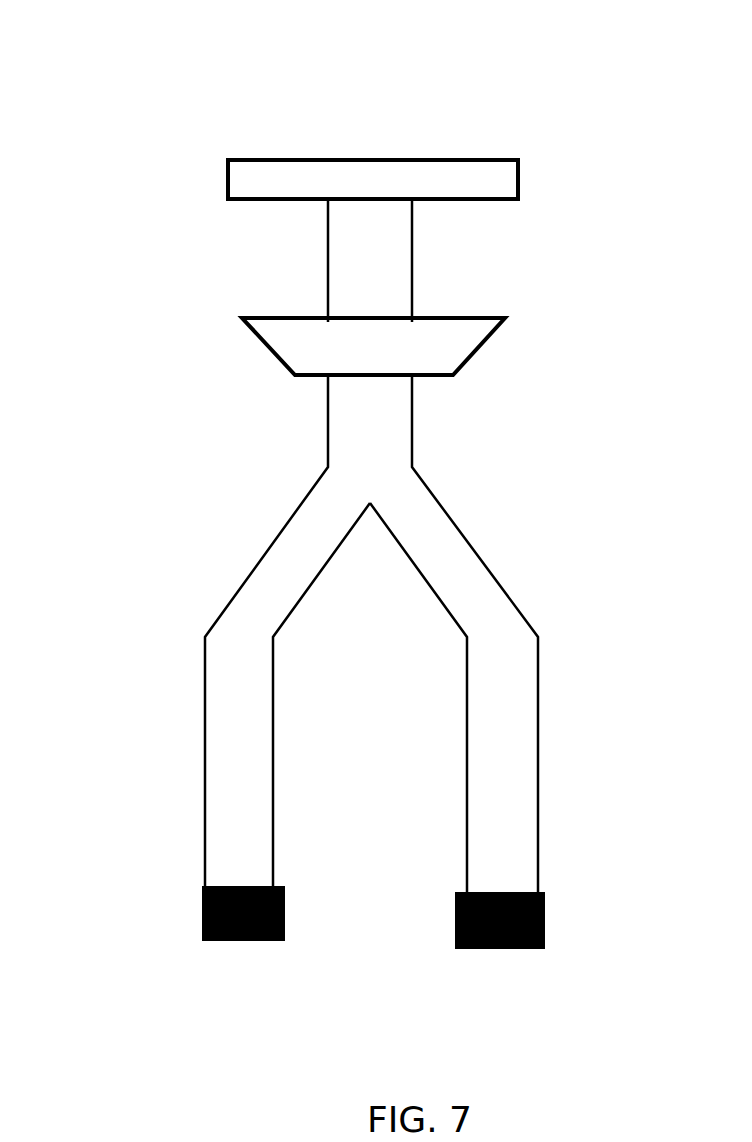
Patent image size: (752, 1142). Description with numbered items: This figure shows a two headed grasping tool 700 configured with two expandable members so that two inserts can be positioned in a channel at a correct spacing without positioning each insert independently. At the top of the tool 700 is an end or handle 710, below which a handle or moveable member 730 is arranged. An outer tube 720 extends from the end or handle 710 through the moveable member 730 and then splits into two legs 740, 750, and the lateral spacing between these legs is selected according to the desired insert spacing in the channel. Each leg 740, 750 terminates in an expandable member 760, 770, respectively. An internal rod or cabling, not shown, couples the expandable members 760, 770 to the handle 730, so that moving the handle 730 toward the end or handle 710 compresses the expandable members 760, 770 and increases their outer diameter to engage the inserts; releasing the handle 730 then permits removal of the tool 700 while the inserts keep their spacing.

The tool 700 is at (492, 133).
The end or handle 710 is at (238, 178).
The outer tube 720 is at (407, 262).
The handle or moveable member 730 is at (263, 350).
The leg 740 is at (223, 685).
The leg 750 is at (532, 682).
The expandable member 760 is at (203, 917).
The expandable member 770 is at (545, 917).